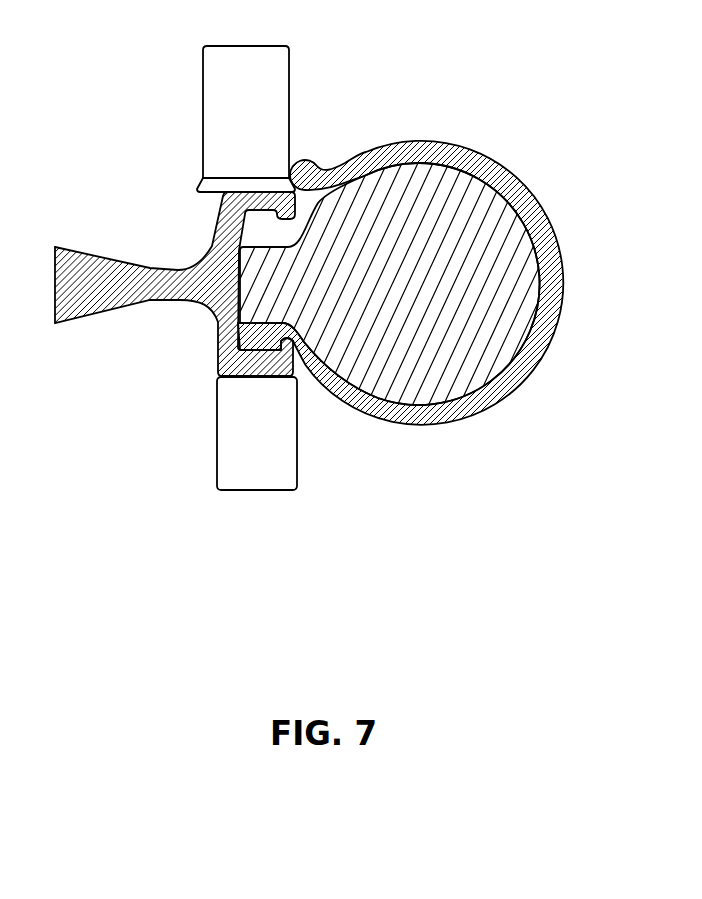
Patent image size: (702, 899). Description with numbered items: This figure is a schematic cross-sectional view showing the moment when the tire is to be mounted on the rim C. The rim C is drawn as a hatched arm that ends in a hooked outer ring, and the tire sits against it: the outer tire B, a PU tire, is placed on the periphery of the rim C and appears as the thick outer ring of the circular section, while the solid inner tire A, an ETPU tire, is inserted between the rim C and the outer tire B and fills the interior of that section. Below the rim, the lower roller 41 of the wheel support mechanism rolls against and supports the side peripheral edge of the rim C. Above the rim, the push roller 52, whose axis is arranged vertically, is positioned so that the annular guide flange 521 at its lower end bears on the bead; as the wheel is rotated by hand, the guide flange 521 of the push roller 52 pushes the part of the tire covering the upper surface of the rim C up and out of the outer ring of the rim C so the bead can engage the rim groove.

The push roller 52 is at (206, 124).
The annular guide flange 521 is at (198, 183).
The lower roller 41 is at (250, 478).
The solid inner tire A is at (407, 400).
The outer tire B is at (448, 427).
The rim C is at (95, 320).